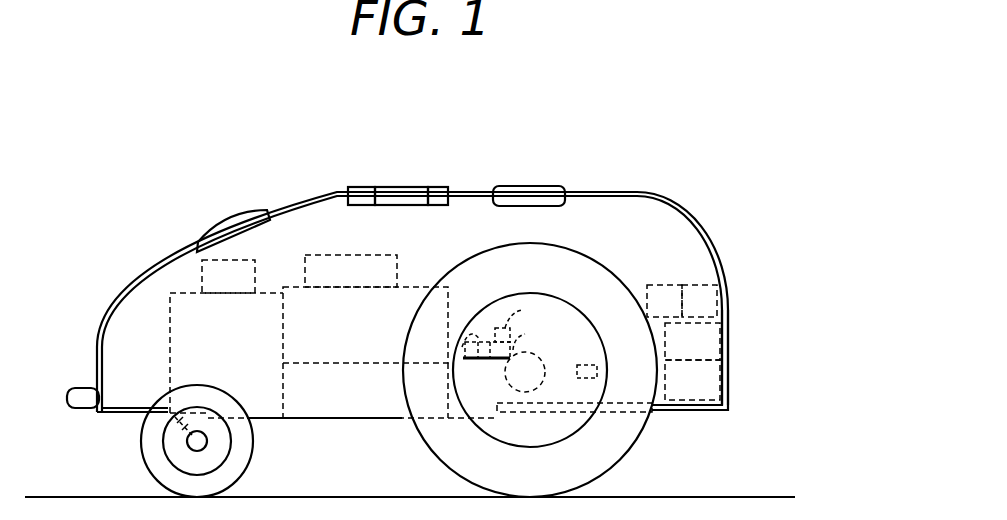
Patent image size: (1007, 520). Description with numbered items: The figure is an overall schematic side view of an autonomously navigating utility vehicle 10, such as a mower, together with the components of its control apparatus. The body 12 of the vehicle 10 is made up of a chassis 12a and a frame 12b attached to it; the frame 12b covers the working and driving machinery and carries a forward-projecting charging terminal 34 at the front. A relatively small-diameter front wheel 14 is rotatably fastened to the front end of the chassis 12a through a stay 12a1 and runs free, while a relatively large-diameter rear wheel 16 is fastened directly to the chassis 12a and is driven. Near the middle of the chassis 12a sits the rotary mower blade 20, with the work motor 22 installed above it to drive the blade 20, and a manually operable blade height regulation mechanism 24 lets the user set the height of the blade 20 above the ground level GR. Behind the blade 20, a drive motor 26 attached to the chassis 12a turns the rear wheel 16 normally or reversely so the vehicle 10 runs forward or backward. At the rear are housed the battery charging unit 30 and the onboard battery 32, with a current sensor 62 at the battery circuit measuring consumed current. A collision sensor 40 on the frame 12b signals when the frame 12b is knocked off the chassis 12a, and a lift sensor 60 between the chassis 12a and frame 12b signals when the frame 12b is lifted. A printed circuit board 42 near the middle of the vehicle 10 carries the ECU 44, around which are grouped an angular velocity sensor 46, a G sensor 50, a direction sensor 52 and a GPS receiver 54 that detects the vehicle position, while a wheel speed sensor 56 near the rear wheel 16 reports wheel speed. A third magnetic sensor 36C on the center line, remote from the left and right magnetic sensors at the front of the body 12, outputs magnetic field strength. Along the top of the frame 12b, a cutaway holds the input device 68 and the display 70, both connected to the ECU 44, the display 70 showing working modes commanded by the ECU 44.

The utility vehicle 10 is at (677, 198).
The body 12 is at (812, 347).
The chassis 12a is at (733, 391).
The frame 12b is at (731, 300).
The stay 12a1 is at (185, 443).
The front wheel 14 is at (147, 468).
The rear wheel 16 is at (428, 450).
The mower blade 20 is at (352, 401).
The work motor 22 is at (352, 338).
The blade height regulation mechanism 24 is at (337, 284).
The drive motor 26 is at (520, 352).
The battery charging unit 30 is at (680, 355).
The onboard battery 32 is at (680, 394).
The charging terminal 34 is at (93, 387).
The third magnetic sensor 36C is at (537, 186).
The collision sensor 40 is at (215, 287).
The printed circuit board 42 is at (485, 359).
The ECU 44 is at (466, 342).
The angular velocity sensor 46 is at (478, 342).
The G sensor 50 is at (497, 328).
The direction sensor 52 is at (527, 314).
The GPS receiver 54 is at (533, 335).
The wheel speed sensor 56 is at (597, 364).
The lift sensor 60 is at (686, 314).
The current sensor 62 is at (652, 314).
The input device 68 is at (437, 189).
The display 70 is at (405, 189).
The ground level GR is at (665, 497).